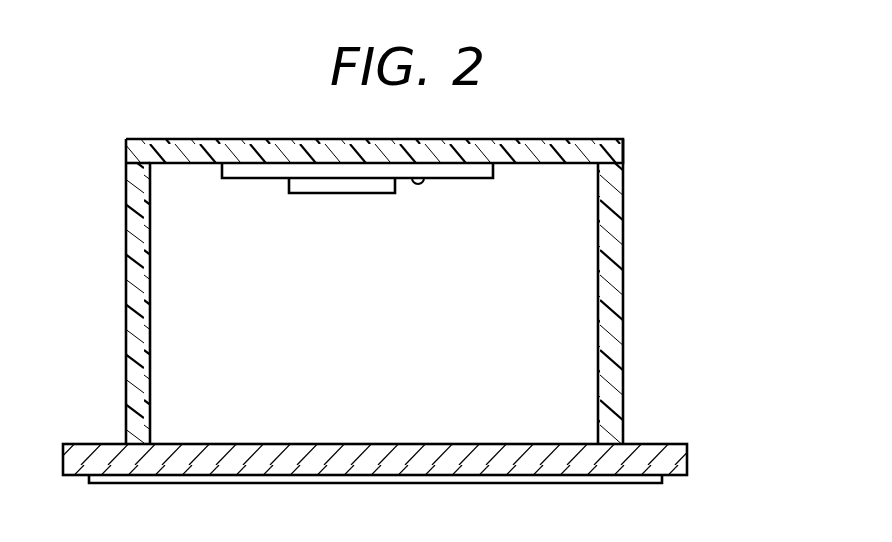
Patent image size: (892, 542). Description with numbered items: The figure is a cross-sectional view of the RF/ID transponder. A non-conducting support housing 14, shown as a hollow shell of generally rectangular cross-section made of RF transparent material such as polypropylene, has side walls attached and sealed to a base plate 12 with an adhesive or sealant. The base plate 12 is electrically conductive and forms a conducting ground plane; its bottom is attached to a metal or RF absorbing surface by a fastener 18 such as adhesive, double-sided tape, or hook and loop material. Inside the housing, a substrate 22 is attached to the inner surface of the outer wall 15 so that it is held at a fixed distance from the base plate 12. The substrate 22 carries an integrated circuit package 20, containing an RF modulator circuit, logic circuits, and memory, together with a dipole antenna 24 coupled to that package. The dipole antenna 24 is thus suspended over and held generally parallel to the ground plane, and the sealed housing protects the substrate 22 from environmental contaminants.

The base plate 12 is at (657, 452).
The support housing 14 is at (606, 250).
The outer wall 15 is at (250, 139).
The fastener 18 is at (165, 478).
The integrated circuit package 20 is at (313, 185).
The substrate 22 is at (455, 178).
The dipole antenna 24 is at (415, 188).